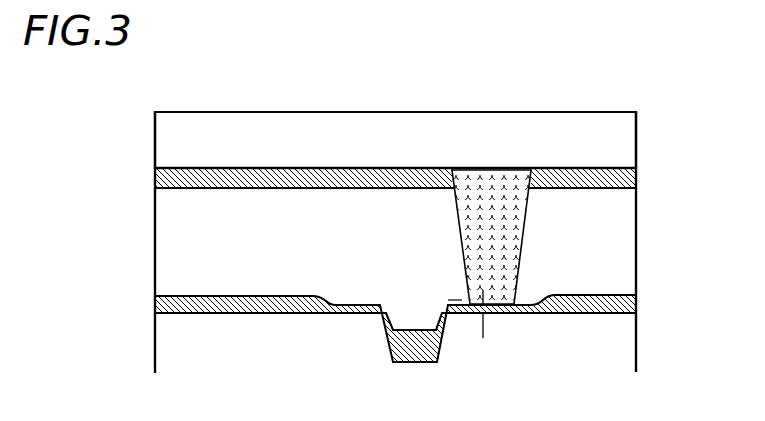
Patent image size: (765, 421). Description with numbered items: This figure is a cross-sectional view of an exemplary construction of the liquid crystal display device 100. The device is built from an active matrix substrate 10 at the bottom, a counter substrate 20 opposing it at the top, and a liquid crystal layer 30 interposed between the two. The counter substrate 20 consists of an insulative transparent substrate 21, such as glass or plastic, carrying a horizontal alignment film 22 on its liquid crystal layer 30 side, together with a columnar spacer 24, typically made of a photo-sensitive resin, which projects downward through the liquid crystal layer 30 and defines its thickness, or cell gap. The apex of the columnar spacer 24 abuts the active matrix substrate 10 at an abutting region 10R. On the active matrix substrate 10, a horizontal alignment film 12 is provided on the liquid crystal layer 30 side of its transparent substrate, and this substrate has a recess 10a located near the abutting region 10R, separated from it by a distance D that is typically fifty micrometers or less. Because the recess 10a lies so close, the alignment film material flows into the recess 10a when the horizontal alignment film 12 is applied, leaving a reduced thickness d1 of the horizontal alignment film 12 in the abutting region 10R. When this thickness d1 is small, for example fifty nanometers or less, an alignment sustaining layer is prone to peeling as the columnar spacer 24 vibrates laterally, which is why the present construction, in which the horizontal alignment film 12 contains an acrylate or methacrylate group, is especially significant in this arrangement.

The liquid crystal display device 100 is at (650, 90).
The counter substrate 20 is at (647, 112).
The transparent substrate 21 is at (165, 137).
The horizontal alignment film 22 is at (158, 178).
The columnar spacer 24 is at (492, 205).
The liquid crystal layer 30 is at (612, 240).
The active matrix substrate 10 is at (648, 294).
The horizontal alignment film 12 is at (156, 311).
The recess 10a is at (411, 316).
The abutting region 10R is at (513, 338).
The distance D is at (468, 300).
The thickness d1 is at (497, 314).